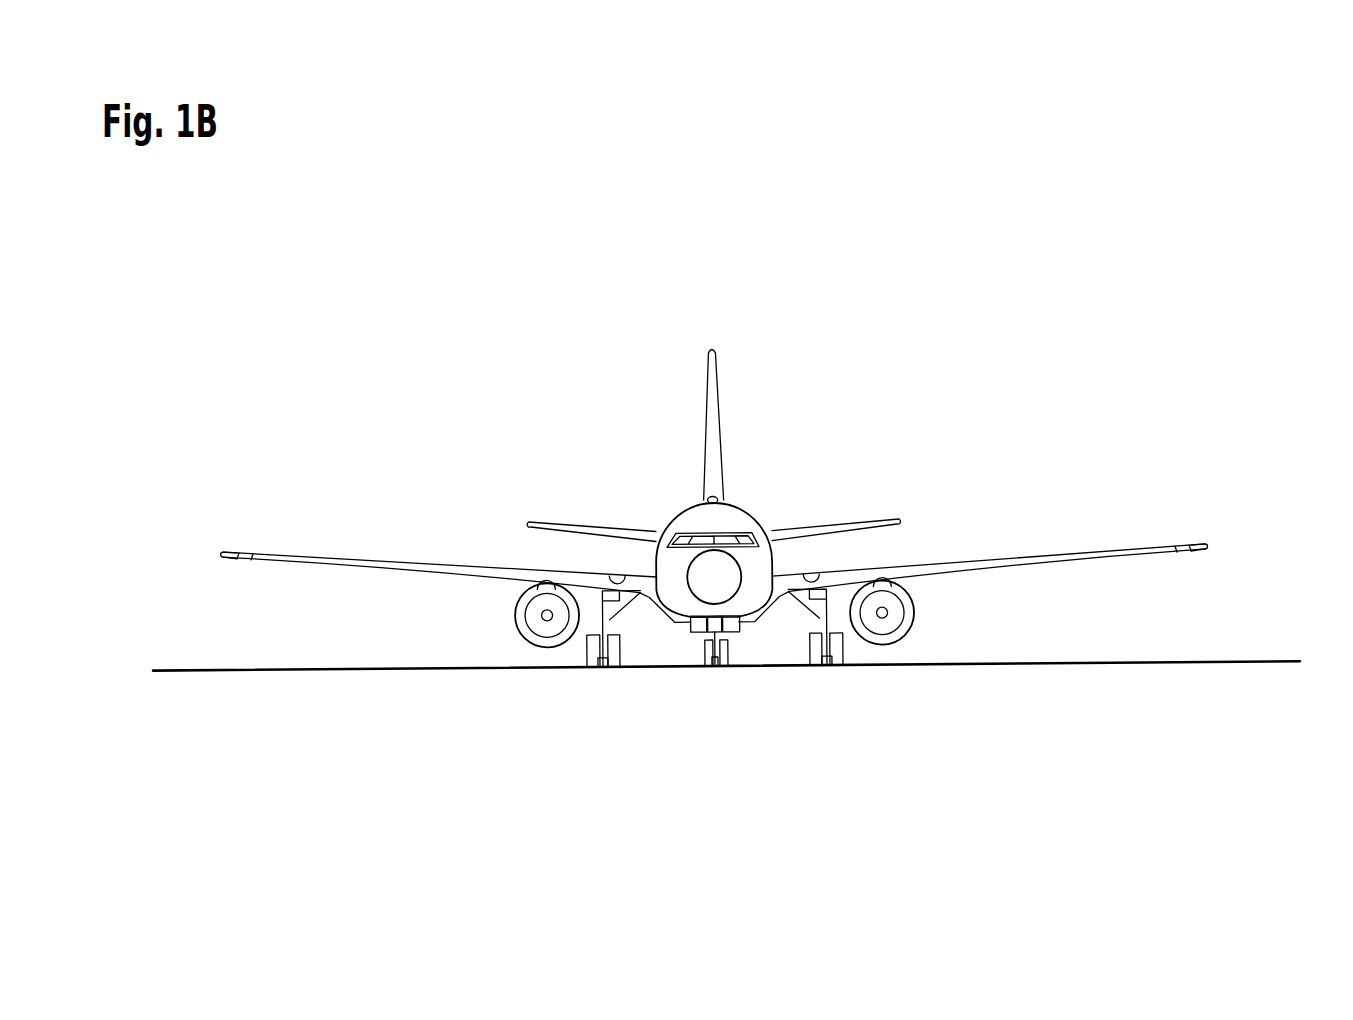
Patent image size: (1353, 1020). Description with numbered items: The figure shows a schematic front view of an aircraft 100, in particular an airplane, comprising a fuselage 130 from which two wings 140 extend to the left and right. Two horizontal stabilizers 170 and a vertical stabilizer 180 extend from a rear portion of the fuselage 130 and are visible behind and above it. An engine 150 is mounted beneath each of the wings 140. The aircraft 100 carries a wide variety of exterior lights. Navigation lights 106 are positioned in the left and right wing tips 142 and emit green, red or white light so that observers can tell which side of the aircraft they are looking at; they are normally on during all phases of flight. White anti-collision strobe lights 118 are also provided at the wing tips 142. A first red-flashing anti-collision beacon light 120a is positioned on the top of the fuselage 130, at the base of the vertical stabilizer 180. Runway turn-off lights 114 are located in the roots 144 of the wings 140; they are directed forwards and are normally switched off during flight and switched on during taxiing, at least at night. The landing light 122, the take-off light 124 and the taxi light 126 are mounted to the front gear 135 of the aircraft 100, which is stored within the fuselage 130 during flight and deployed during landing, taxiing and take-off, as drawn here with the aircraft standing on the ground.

The aircraft 100 is at (733, 528).
The fuselage 130 is at (683, 488).
The vertical stabilizer 180 is at (743, 384).
The first red-flashing anti-collision beacon light 120a is at (712, 499).
The horizontal stabilizers 170 is at (579, 495).
The wings 140 is at (352, 524).
The wing tips 142 is at (216, 583).
The navigation lights 106 is at (235, 549).
The white anti-collision strobe lights 118 is at (252, 550).
The runway turn-off lights 114 is at (611, 573).
The engine 150 is at (504, 607).
The roots of the wings 144 is at (647, 616).
The take-off light 124 is at (691, 628).
The taxi light 126 is at (710, 634).
The landing light 122 is at (740, 628).
The front gear 135 is at (731, 680).